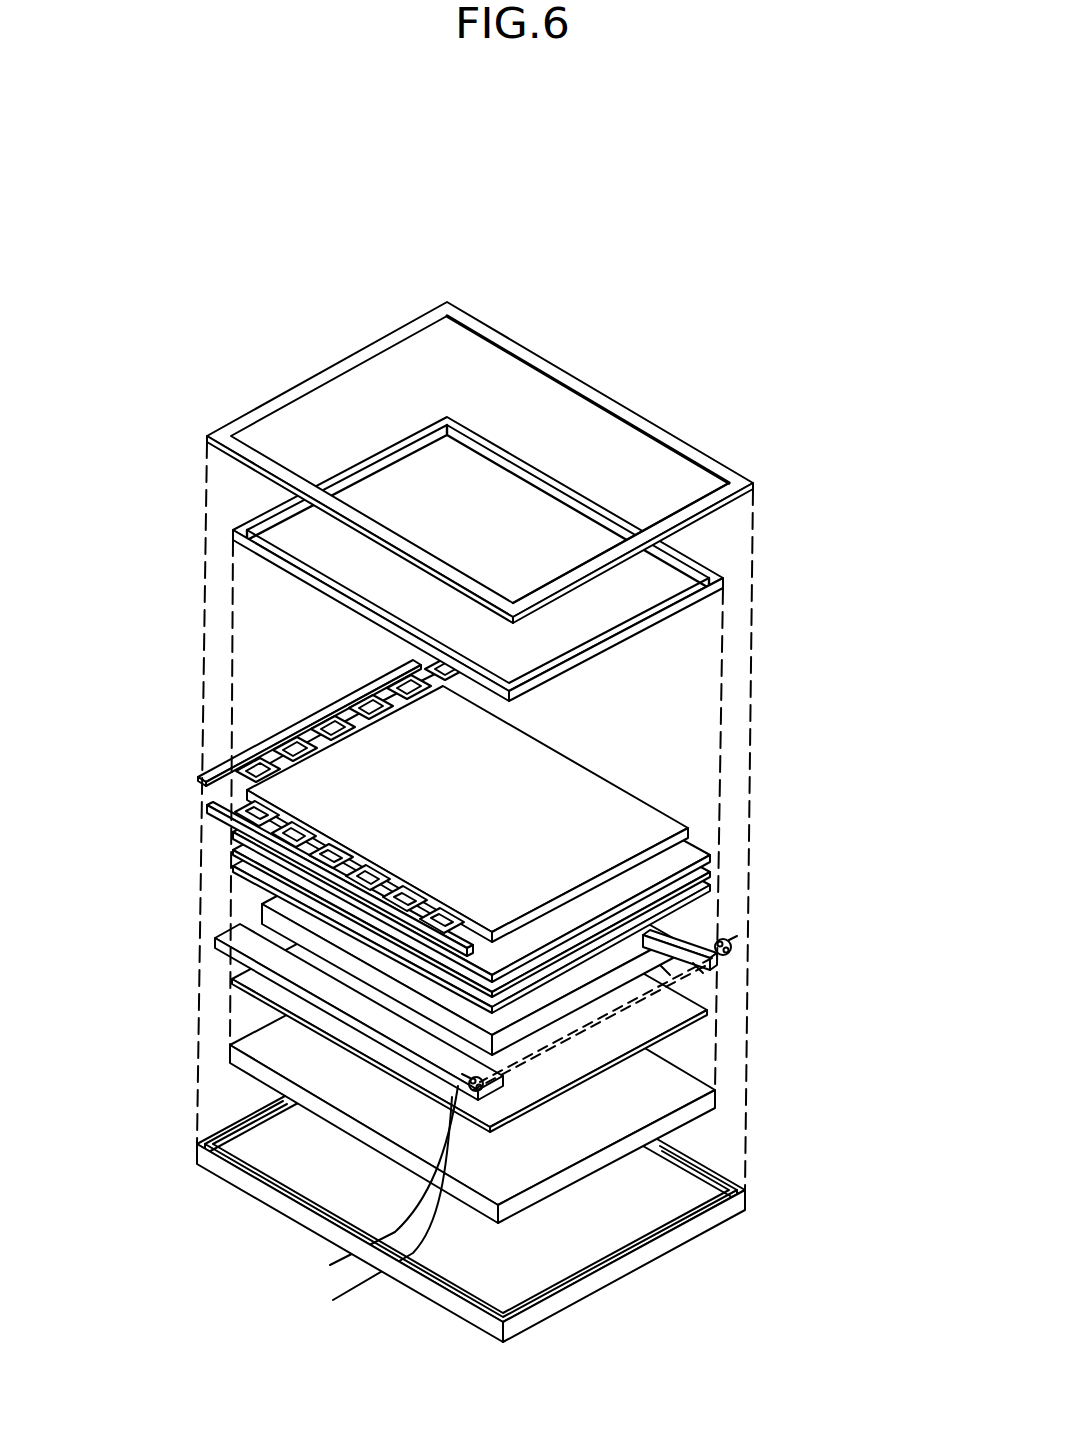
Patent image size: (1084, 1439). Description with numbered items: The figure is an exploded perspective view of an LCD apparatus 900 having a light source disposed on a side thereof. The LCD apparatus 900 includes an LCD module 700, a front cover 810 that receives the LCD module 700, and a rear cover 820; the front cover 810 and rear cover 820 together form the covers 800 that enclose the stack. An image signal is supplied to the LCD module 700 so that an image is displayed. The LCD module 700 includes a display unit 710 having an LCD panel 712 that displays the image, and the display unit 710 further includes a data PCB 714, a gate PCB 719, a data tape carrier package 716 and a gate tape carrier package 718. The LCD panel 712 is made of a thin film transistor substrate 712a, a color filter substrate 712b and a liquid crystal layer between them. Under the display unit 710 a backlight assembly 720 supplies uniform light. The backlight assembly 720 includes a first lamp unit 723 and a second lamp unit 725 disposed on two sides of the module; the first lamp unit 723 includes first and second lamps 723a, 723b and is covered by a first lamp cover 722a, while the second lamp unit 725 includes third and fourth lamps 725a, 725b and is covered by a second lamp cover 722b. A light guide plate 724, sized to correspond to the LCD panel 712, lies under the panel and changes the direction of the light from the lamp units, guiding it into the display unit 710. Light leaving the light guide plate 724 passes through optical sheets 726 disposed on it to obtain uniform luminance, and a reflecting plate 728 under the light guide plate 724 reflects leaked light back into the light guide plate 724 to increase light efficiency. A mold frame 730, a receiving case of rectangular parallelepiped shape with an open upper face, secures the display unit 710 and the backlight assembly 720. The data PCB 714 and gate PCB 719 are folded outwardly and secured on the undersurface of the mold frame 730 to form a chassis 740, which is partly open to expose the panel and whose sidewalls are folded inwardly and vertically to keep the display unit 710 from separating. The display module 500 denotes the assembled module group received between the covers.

The LCD apparatus 900 is at (507, 822).
The display module 500 is at (507, 822).
The LCD module 700 is at (507, 870).
The display unit 710 is at (482, 804).
The LCD panel 712 is at (536, 834).
The thin film transistor substrate 712a is at (700, 850).
The color filter substrate 712b is at (693, 830).
The data PCB 714 is at (245, 809).
The data tape carrier package 716 is at (215, 797).
The gate tape carrier package 718 is at (297, 747).
The gate PCB 719 is at (343, 707).
The backlight assembly 720 is at (580, 1026).
The first lamp cover 722a is at (353, 1018).
The second lamp cover 722b is at (723, 933).
The first lamp unit 723 is at (335, 1204).
The first lamp 723a is at (365, 1185).
The second lamp 723b is at (270, 1258).
The light guide plate 724 is at (730, 955).
The second lamp unit 725 is at (628, 1034).
The third lamp 725a is at (733, 945).
The fourth lamp 725b is at (731, 952).
The optical sheets 726 is at (752, 857).
The reflecting plate 728 is at (533, 1090).
The mold frame 730 is at (630, 1140).
The chassis 740 is at (700, 603).
The chassis 800 is at (531, 822).
The front cover 810 is at (508, 347).
The rear cover 820 is at (640, 1283).